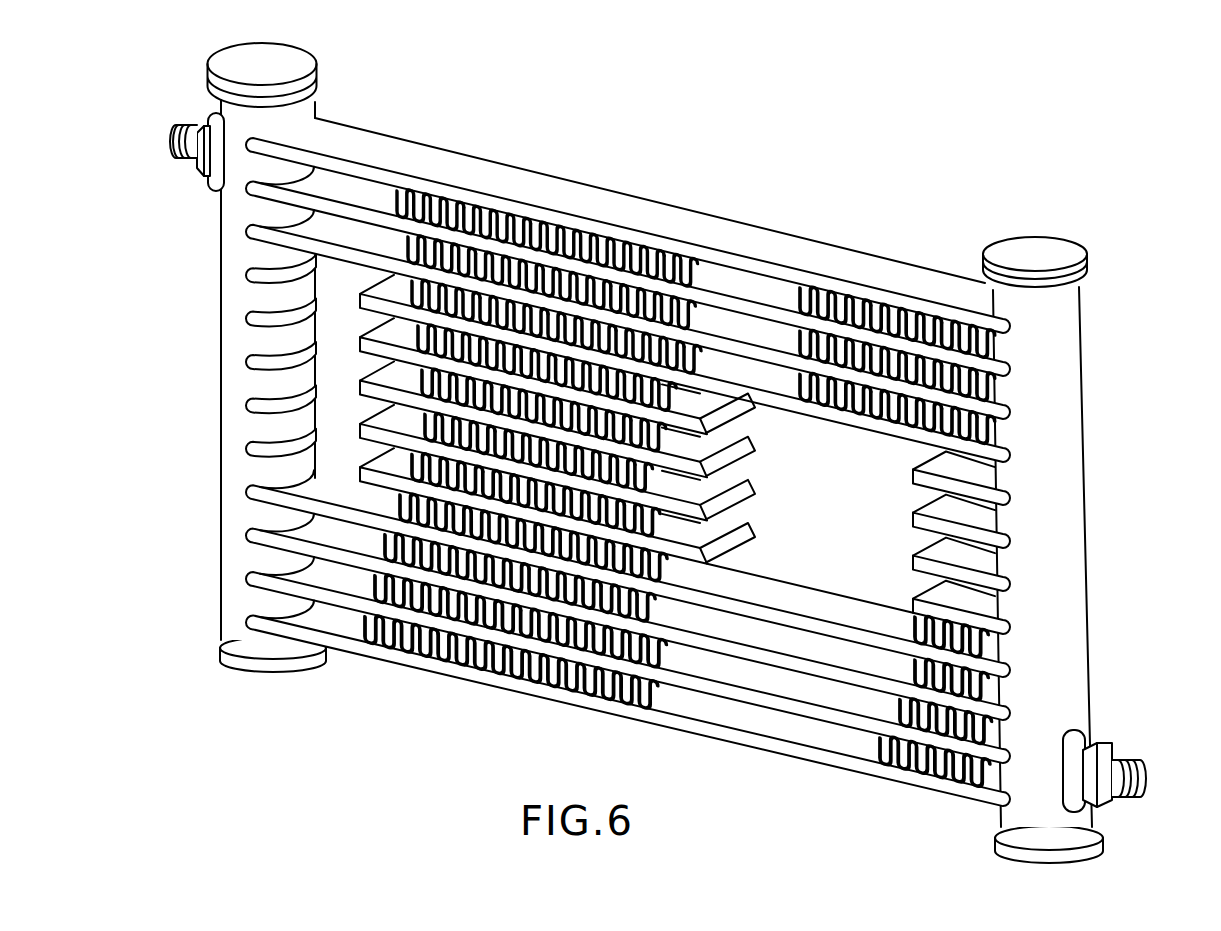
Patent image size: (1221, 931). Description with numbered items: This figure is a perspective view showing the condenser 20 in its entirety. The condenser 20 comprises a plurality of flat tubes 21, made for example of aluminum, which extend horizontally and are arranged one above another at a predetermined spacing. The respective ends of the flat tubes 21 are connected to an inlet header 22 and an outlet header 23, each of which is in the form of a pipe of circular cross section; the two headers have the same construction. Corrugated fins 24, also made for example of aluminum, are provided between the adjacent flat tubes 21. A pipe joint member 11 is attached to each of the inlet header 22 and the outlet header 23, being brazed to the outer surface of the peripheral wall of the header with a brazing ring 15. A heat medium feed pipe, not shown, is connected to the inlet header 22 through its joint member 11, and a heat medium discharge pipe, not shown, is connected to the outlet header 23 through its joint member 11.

The pipe joint member 11 is at (190, 124).
The brazing ring 15 is at (210, 183).
The condenser 20 is at (670, 453).
The flat tubes 21 is at (775, 258).
The inlet header 22 is at (221, 366).
The outlet header 23 is at (1086, 500).
The corrugated fins 24 is at (685, 290).